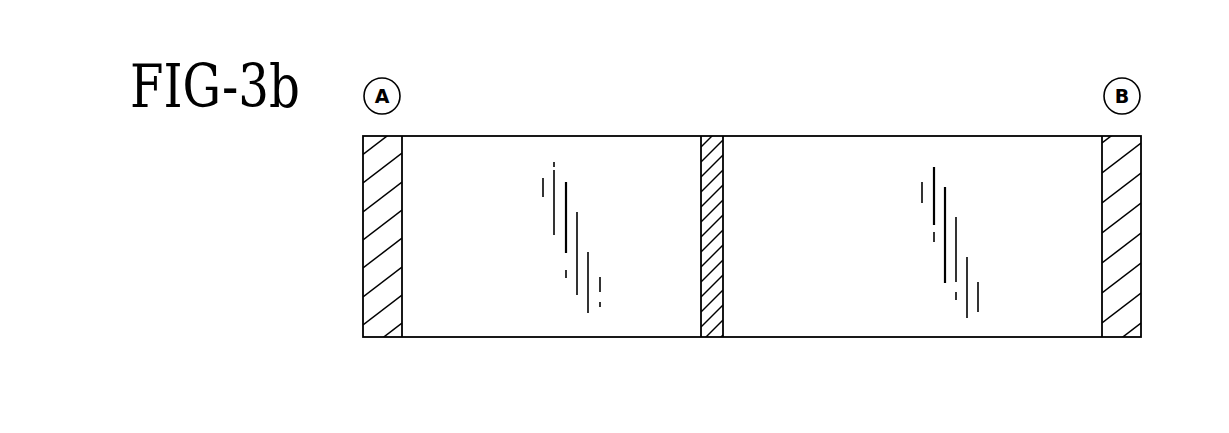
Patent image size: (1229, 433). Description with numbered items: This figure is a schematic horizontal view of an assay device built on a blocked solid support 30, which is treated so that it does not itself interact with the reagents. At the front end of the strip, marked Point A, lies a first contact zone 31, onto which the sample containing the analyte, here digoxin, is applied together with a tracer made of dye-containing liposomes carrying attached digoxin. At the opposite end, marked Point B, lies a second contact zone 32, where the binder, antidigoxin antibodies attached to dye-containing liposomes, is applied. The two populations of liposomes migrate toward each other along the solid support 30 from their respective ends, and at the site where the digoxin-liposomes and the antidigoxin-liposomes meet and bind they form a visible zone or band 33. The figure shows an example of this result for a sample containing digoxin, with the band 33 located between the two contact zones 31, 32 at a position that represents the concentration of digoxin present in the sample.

The solid support 30 is at (833, 136).
The first contact zone 31 is at (380, 204).
The second contact zone 32 is at (1130, 262).
The visible zone or band 33 is at (717, 305).